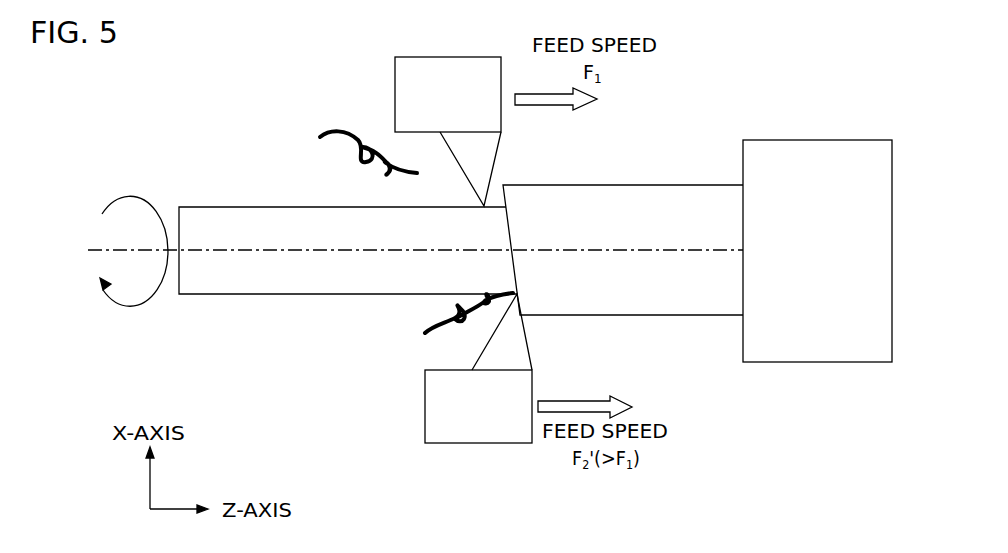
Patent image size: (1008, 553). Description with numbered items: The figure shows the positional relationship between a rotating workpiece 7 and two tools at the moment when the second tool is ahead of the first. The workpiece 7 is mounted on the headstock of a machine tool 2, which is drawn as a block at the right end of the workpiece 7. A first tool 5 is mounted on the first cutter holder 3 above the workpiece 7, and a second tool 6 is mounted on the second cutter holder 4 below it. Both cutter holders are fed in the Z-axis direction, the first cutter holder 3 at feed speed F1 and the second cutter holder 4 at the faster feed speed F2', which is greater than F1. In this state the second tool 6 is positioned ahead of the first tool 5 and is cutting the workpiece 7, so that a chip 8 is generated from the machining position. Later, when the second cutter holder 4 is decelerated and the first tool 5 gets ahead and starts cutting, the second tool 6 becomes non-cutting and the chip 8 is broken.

The machine tool 2 is at (788, 362).
The first cutter holder 3 is at (395, 90).
The second cutter holder 4 is at (495, 444).
The first tool 5 is at (495, 162).
The second tool 6 is at (528, 347).
The workpiece 7 is at (677, 315).
The chip 8 is at (322, 133).